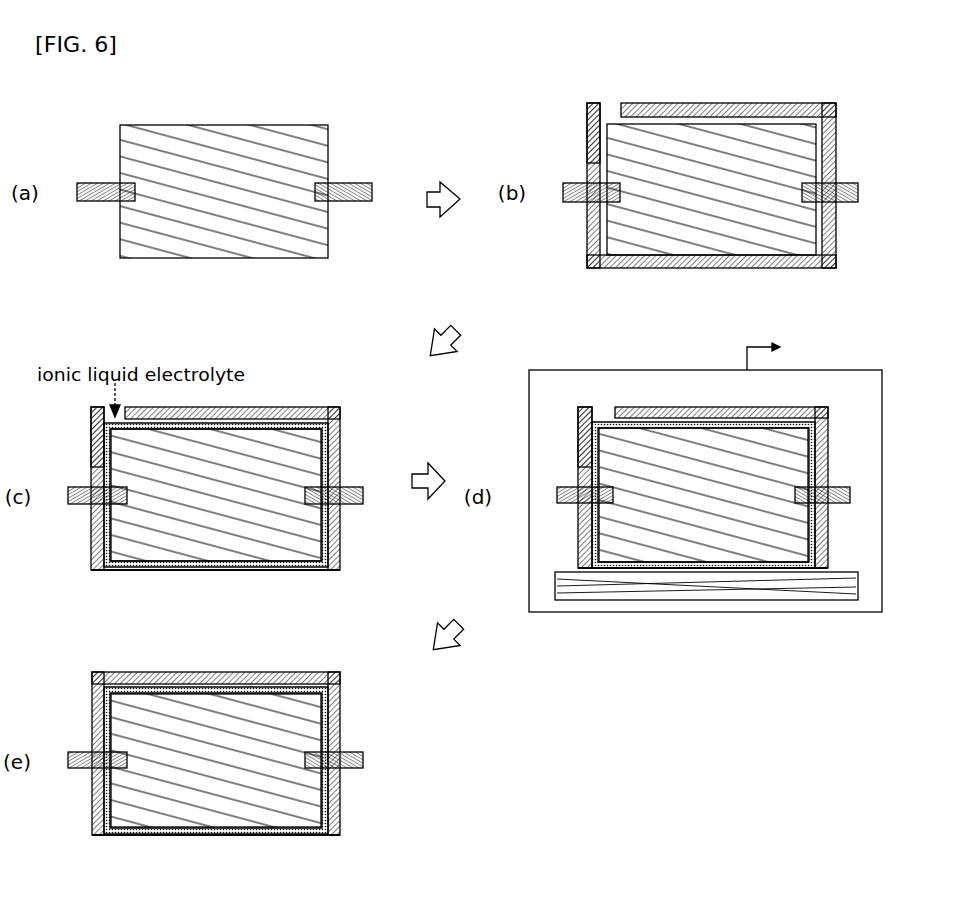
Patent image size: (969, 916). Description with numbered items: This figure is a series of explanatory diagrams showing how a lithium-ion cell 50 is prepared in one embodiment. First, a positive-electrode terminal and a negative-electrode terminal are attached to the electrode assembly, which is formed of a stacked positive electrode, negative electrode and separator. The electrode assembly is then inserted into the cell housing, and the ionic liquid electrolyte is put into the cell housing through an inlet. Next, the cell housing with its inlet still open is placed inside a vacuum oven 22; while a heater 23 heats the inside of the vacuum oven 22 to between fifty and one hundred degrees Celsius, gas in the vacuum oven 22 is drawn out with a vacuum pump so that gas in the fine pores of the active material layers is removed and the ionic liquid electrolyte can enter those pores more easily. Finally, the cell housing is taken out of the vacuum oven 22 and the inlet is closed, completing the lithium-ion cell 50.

The vacuum oven 22 is at (588, 612).
The heater 23 is at (797, 585).
The lithium-ion cell 50 is at (220, 740).